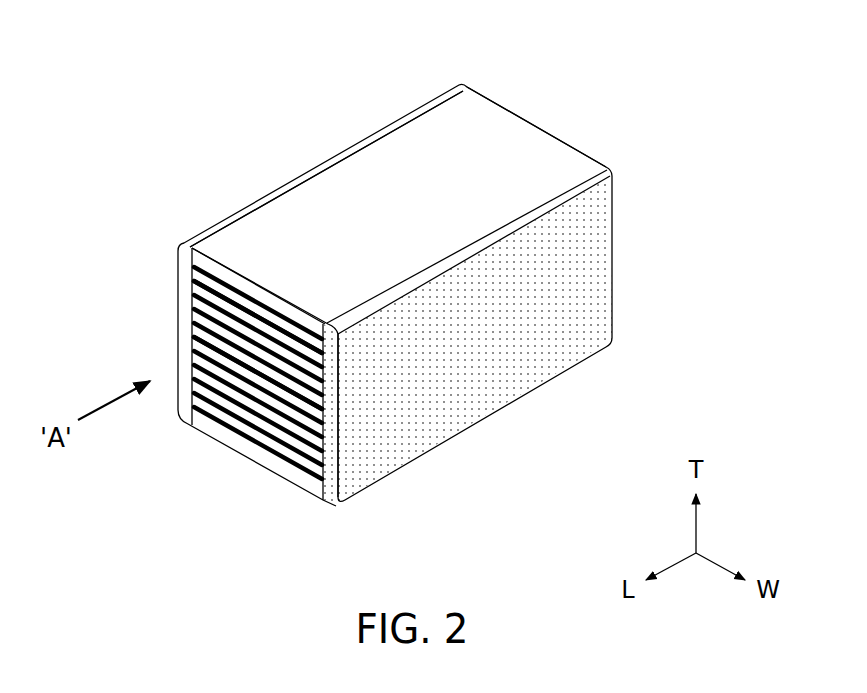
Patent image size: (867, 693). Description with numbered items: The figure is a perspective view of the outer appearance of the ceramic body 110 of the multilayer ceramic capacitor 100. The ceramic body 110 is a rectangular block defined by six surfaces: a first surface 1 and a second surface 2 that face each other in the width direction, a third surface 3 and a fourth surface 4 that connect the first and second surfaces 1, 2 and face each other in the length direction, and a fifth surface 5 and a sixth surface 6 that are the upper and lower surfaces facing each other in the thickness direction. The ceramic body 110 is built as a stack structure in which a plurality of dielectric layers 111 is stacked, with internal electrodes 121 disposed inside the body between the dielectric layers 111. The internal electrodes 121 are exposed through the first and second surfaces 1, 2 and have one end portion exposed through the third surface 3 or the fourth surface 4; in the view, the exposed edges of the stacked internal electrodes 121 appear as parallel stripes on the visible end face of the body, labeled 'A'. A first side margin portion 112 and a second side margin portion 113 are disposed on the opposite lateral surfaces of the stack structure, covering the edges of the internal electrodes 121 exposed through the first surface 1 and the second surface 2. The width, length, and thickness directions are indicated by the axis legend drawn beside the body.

The multilayer ceramic capacitor 100 is at (210, 35).
The first surface 1 is at (246, 246).
The second surface 2 is at (562, 293).
The third surface 3 is at (250, 415).
The fourth surface 4 is at (540, 160).
The fifth surface 5 is at (416, 148).
The sixth surface 6 is at (487, 386).
The ceramic body 110 is at (346, 190).
The dielectric layer 111 is at (190, 332).
The first side margin portion 112 is at (283, 184).
The second side margin portion 113 is at (568, 183).
The internal electrode 121 is at (190, 305).